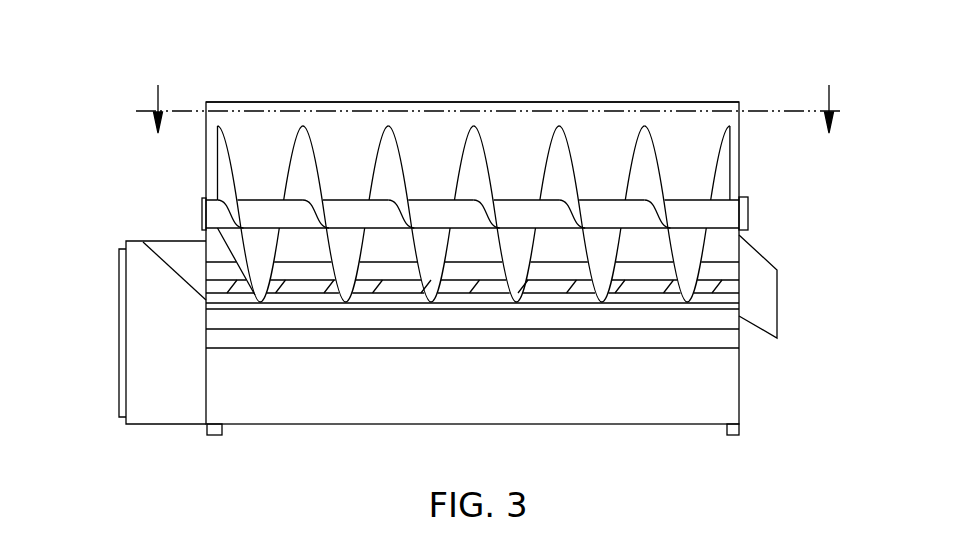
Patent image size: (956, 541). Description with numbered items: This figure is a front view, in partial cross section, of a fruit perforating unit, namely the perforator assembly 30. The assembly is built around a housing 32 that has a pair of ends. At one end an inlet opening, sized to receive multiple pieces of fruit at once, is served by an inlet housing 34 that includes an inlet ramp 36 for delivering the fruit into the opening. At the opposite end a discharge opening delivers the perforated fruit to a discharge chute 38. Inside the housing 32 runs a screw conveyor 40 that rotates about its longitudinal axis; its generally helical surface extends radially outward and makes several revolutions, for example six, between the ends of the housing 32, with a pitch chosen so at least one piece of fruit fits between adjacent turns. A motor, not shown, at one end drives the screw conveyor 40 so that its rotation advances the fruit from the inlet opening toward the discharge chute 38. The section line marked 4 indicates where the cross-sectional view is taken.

The section line 4- 4 is at (488, 95).
The perforator assembly 30 is at (250, 123).
The housing 32 is at (498, 103).
The inlet housing 34 is at (138, 283).
The inlet ramp 36 is at (150, 243).
The discharge chute 38 is at (755, 275).
The screw conveyor 40 is at (390, 125).